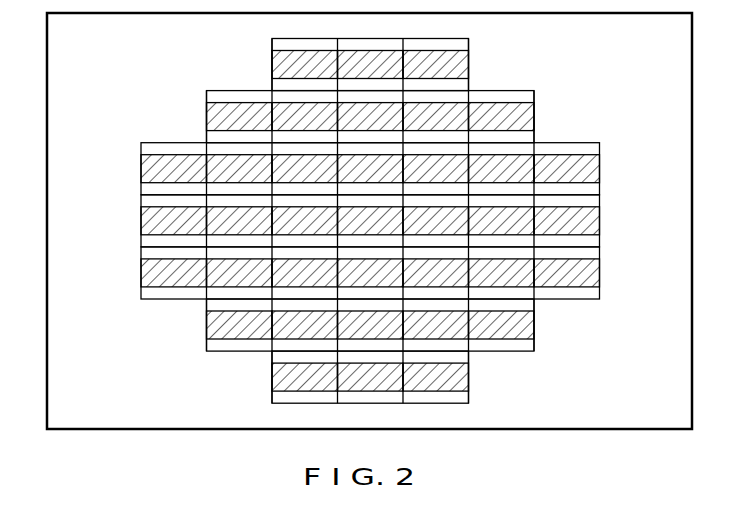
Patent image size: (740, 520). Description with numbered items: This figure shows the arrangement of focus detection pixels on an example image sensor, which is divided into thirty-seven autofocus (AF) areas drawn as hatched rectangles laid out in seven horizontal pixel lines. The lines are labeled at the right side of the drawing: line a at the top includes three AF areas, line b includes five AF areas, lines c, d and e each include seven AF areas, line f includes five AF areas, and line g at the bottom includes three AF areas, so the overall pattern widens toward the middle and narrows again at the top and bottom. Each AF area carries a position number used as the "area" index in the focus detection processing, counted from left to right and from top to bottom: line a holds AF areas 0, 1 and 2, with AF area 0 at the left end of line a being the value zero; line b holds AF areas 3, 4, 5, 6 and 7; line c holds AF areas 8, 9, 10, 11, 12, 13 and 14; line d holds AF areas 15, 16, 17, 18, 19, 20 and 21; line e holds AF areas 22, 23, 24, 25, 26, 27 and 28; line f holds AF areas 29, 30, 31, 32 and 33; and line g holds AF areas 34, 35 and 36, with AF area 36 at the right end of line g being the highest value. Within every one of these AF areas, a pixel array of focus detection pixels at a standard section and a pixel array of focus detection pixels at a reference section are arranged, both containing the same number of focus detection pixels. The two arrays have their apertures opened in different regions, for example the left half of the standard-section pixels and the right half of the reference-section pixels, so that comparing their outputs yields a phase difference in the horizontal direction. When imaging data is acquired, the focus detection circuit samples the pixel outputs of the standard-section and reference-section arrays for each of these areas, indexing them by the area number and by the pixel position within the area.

The line a is at (468, 44).
The line b is at (534, 96).
The line c is at (600, 148).
The line d is at (600, 200).
The line e is at (600, 253).
The line f is at (534, 346).
The line g is at (468, 398).
The AF area 0 is at (305, 65).
The AF area 1 is at (371, 65).
The AF area 2 is at (436, 65).
The AF area 3 is at (240, 117).
The AF area 4 is at (305, 117).
The AF area 5 is at (371, 117).
The AF area 6 is at (436, 117).
The AF area 7 is at (502, 117).
The AF area 8 is at (174, 169).
The AF area 9 is at (240, 169).
The AF area 10 is at (305, 169).
The AF area 11 is at (371, 169).
The AF area 12 is at (436, 169).
The AF area 13 is at (502, 169).
The AF area 14 is at (567, 169).
The AF area 15 is at (174, 221).
The AF area 16 is at (240, 221).
The AF area 17 is at (305, 221).
The AF area 18 is at (371, 221).
The AF area 19 is at (436, 221).
The AF area 20 is at (502, 221).
The AF area 21 is at (567, 221).
The AF area 22 is at (174, 273).
The AF area 23 is at (240, 273).
The AF area 24 is at (305, 273).
The AF area 25 is at (371, 273).
The AF area 26 is at (436, 273).
The AF area 27 is at (502, 273).
The AF area 28 is at (567, 273).
The AF area 29 is at (240, 325).
The AF area 30 is at (305, 325).
The AF area 31 is at (371, 325).
The AF area 32 is at (436, 325).
The AF area 33 is at (502, 325).
The AF area 34 is at (305, 377).
The AF area 35 is at (371, 377).
The AF area 36 is at (436, 377).